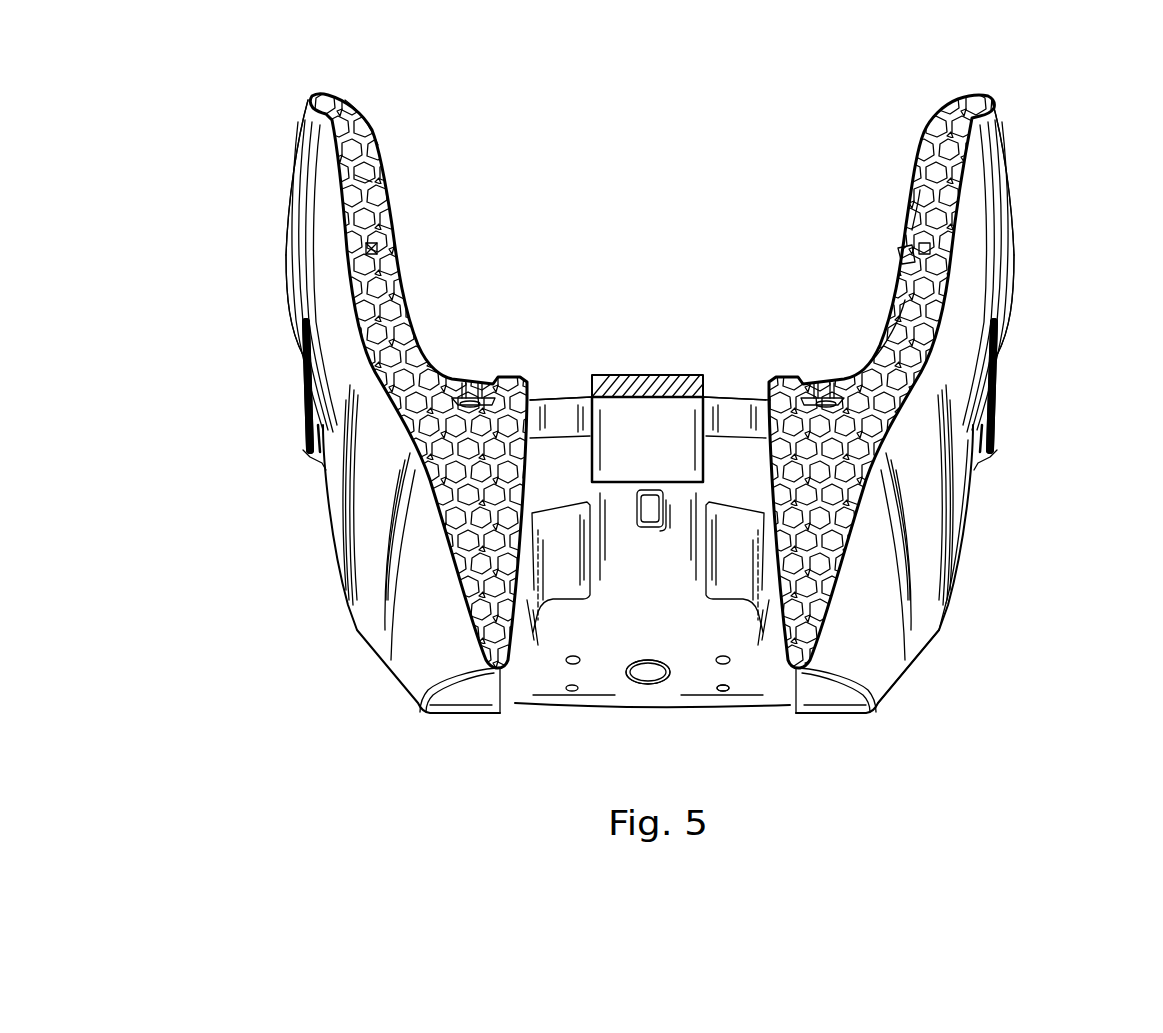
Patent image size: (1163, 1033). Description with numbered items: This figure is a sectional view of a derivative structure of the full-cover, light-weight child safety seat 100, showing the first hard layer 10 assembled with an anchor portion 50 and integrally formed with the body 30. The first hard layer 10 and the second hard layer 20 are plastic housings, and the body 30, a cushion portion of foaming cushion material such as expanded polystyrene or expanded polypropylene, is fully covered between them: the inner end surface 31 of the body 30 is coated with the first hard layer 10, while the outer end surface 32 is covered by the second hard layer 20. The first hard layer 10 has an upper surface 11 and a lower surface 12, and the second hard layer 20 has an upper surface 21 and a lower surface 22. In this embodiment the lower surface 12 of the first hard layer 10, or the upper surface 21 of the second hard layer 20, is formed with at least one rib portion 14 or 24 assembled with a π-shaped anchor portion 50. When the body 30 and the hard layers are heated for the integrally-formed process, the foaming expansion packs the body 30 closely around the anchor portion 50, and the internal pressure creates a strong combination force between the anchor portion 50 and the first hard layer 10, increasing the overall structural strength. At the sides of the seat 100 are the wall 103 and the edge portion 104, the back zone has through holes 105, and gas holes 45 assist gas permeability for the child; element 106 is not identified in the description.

The first hard layer 10 is at (404, 108).
The upper surface 11 is at (397, 170).
The lower surface 12 is at (378, 192).
The rib portion 14 is at (468, 385).
The second hard layer 20 is at (994, 513).
The upper surface 21 is at (977, 330).
The lower surface 22 is at (843, 529).
The rib portion 24 is at (403, 247).
The body 30 is at (457, 487).
The inner end surface 31 is at (898, 405).
The outer end surface 32 is at (925, 201).
The gas holes 45 is at (648, 688).
The anchor portion 50 is at (403, 247).
The child safety seat 100 is at (877, 657).
The wall 103 is at (330, 295).
The edge portion 104 is at (285, 200).
The through holes 105 is at (562, 415).
The arm edge strip 106 is at (303, 409).